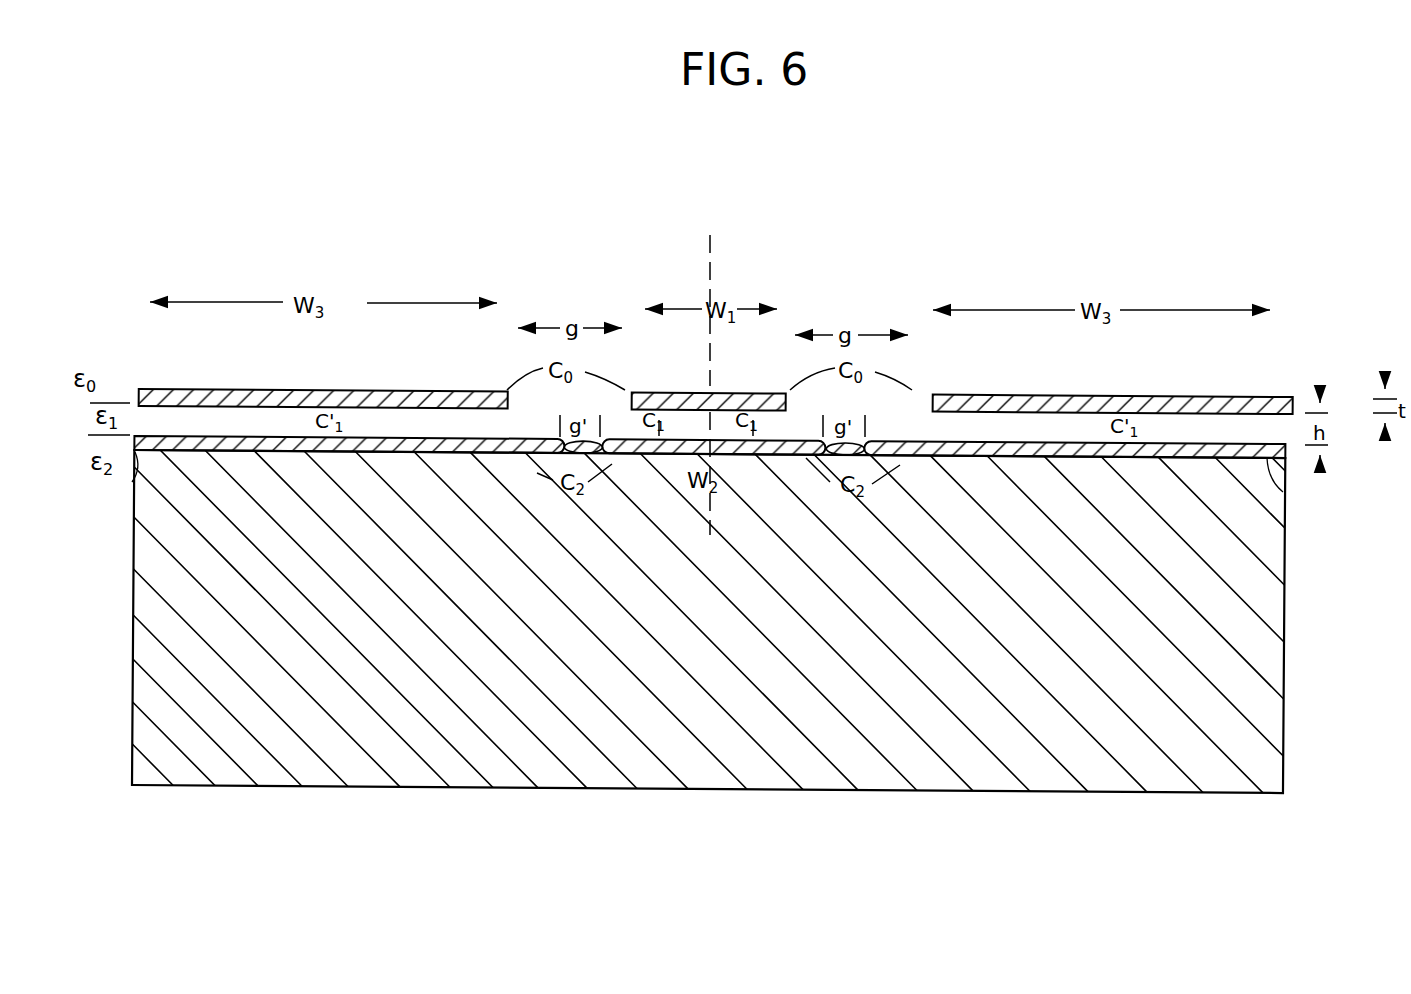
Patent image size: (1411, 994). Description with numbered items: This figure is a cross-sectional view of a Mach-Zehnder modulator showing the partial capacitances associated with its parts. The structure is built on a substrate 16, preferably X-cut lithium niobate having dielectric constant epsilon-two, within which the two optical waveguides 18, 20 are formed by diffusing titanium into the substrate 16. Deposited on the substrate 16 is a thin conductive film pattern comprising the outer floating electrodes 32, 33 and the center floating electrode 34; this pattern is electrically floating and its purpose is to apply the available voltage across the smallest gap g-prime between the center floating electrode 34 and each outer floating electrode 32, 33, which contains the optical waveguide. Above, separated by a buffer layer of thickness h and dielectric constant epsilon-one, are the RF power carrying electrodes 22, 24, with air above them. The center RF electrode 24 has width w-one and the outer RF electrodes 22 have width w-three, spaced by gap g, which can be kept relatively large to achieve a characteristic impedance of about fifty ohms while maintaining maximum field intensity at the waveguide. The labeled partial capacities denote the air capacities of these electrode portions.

The substrate 16 is at (1268, 676).
The optical waveguide 18 is at (562, 457).
The optical waveguide 20 is at (906, 457).
The RF electrode 22 is at (330, 389).
The RF electrode 24 is at (722, 394).
The outer floating electrode 32 is at (132, 478).
The outer floating electrode 33 is at (1283, 488).
The center floating electrode 34 is at (690, 448).